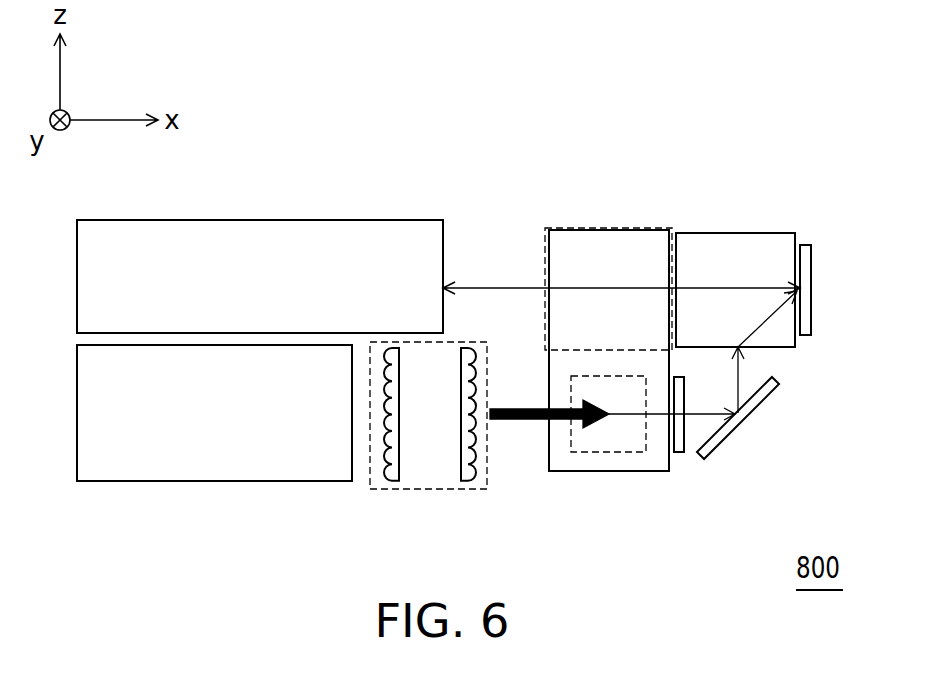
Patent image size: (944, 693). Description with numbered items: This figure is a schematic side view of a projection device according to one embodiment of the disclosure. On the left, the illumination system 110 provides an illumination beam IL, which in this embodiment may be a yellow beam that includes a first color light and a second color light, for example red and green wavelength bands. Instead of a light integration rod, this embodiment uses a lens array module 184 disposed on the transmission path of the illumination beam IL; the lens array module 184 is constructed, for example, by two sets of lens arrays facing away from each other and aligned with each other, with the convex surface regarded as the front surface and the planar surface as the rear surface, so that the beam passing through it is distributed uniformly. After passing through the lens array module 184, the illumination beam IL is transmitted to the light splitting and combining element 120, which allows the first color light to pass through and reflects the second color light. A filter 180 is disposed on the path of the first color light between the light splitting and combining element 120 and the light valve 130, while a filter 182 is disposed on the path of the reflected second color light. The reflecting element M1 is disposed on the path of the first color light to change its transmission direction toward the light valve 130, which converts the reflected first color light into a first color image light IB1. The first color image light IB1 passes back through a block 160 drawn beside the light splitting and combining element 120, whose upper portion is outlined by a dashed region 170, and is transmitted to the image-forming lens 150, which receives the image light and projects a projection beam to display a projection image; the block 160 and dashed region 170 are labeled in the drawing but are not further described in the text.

The illumination system 110 is at (207, 464).
The light splitting and combining element 120 is at (613, 463).
The light valve 130 is at (806, 325).
The image-forming lens 150 is at (250, 240).
The optical module 160 is at (743, 252).
The mirror module 170 is at (618, 228).
The filter 180 is at (680, 455).
The filter 182 is at (582, 455).
The lens array module 184 is at (428, 490).
The illumination beam IL is at (505, 432).
The first color image light IB1 is at (503, 287).
The reflecting element M1 is at (735, 456).